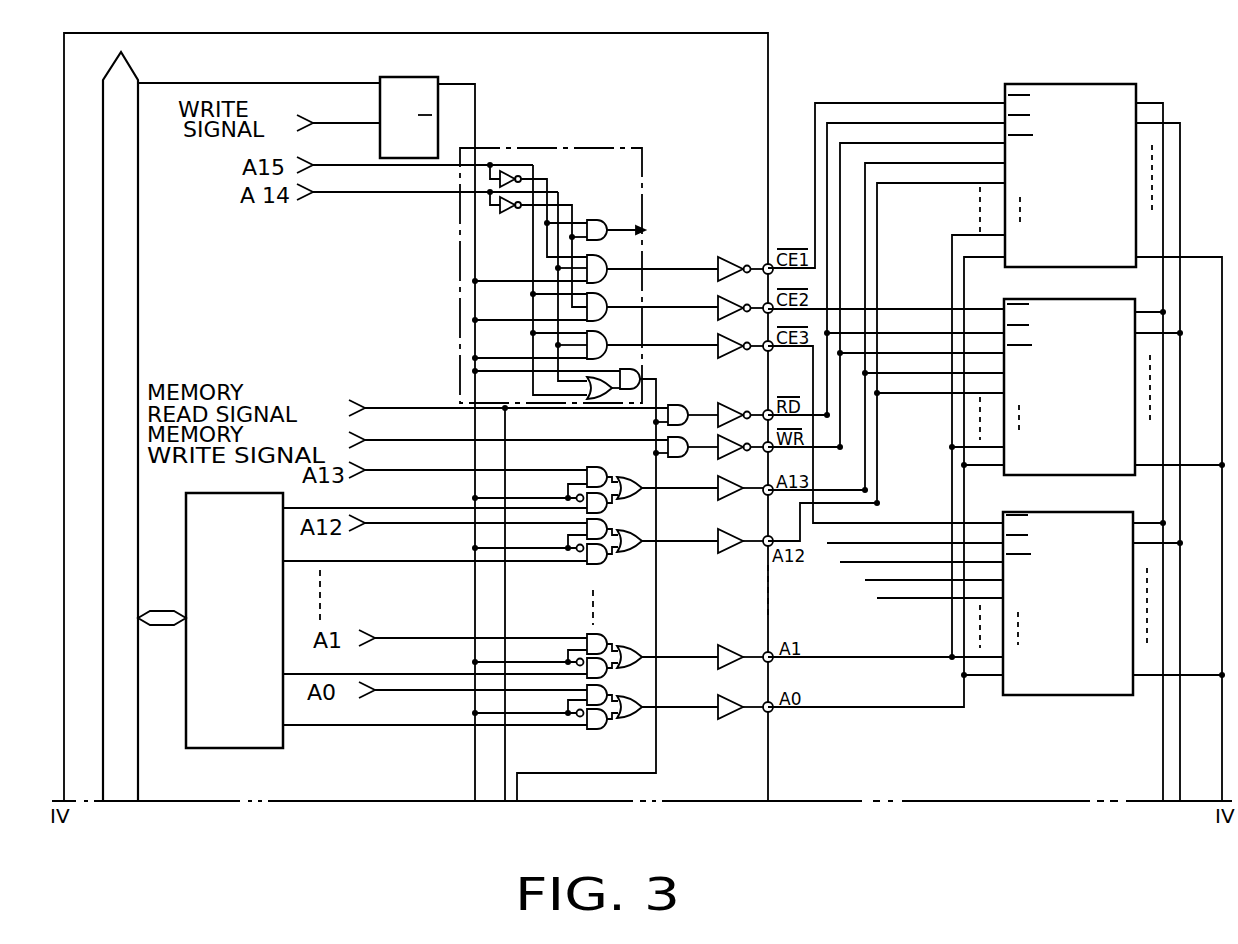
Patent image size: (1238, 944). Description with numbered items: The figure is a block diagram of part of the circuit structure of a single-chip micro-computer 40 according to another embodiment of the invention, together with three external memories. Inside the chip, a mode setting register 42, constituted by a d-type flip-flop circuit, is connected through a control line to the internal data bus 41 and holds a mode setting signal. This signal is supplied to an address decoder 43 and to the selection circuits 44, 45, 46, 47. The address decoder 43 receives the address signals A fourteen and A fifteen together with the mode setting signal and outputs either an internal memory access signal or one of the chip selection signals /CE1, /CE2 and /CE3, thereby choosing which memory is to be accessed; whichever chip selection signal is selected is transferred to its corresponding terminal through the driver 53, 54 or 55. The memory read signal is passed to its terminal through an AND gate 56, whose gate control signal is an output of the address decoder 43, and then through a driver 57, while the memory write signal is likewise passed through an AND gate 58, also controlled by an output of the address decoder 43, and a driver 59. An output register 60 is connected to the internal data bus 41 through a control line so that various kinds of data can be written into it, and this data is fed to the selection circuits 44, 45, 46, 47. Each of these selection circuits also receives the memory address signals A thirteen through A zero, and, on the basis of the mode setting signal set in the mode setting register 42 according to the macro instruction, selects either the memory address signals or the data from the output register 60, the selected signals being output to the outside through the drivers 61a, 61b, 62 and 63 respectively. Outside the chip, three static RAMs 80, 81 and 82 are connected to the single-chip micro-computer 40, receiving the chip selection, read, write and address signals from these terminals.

The single-chip micro-computer 40 is at (769, 53).
The internal data bus 41 is at (138, 308).
The mode setting register 42 is at (380, 78).
The address decoder 43 is at (613, 147).
The selection circuit 44 is at (613, 473).
The selection circuit 45 is at (613, 530).
The selection circuit 46 is at (613, 633).
The selection circuit 47 is at (610, 692).
The driver 53 is at (717, 276).
The driver 54 is at (717, 315).
The driver 55 is at (717, 355).
The AND gate 56 is at (667, 423).
The driver 57 is at (727, 407).
The AND gate 58 is at (682, 457).
The driver 59 is at (733, 457).
The output register 60 is at (248, 748).
The driver 61a is at (733, 500).
The driver 61b is at (735, 553).
The driver 62 is at (733, 670).
The driver 63 is at (733, 720).
The static RAM 80 is at (1136, 222).
The static RAM 81 is at (1135, 437).
The static RAM 82 is at (1133, 660).